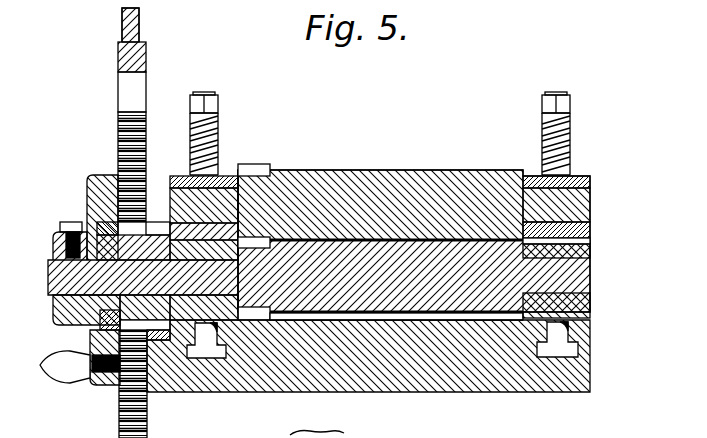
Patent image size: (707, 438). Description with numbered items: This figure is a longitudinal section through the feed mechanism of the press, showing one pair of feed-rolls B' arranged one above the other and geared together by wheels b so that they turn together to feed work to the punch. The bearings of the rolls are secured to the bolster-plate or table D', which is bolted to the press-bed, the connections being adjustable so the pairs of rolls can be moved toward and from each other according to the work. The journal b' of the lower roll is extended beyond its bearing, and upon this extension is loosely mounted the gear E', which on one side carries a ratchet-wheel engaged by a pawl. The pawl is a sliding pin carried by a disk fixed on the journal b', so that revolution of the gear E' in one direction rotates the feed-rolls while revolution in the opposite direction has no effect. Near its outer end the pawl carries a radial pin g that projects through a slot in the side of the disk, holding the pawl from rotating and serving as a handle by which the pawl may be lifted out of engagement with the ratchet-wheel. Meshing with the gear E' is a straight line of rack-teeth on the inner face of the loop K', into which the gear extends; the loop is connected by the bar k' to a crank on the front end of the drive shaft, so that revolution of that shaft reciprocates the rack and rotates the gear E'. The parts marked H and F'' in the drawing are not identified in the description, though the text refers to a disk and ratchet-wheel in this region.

The loop K' is at (148, 40).
The bar k' is at (143, 255).
The radial pin g is at (90, 189).
The gear E' is at (167, 218).
The gear wheels b is at (380, 243).
The feed-rolls B' is at (414, 227).
The journal b' is at (130, 277).
The lower bracket H is at (52, 310).
The lever F'' is at (80, 357).
The bolster-plate or table D' is at (368, 368).